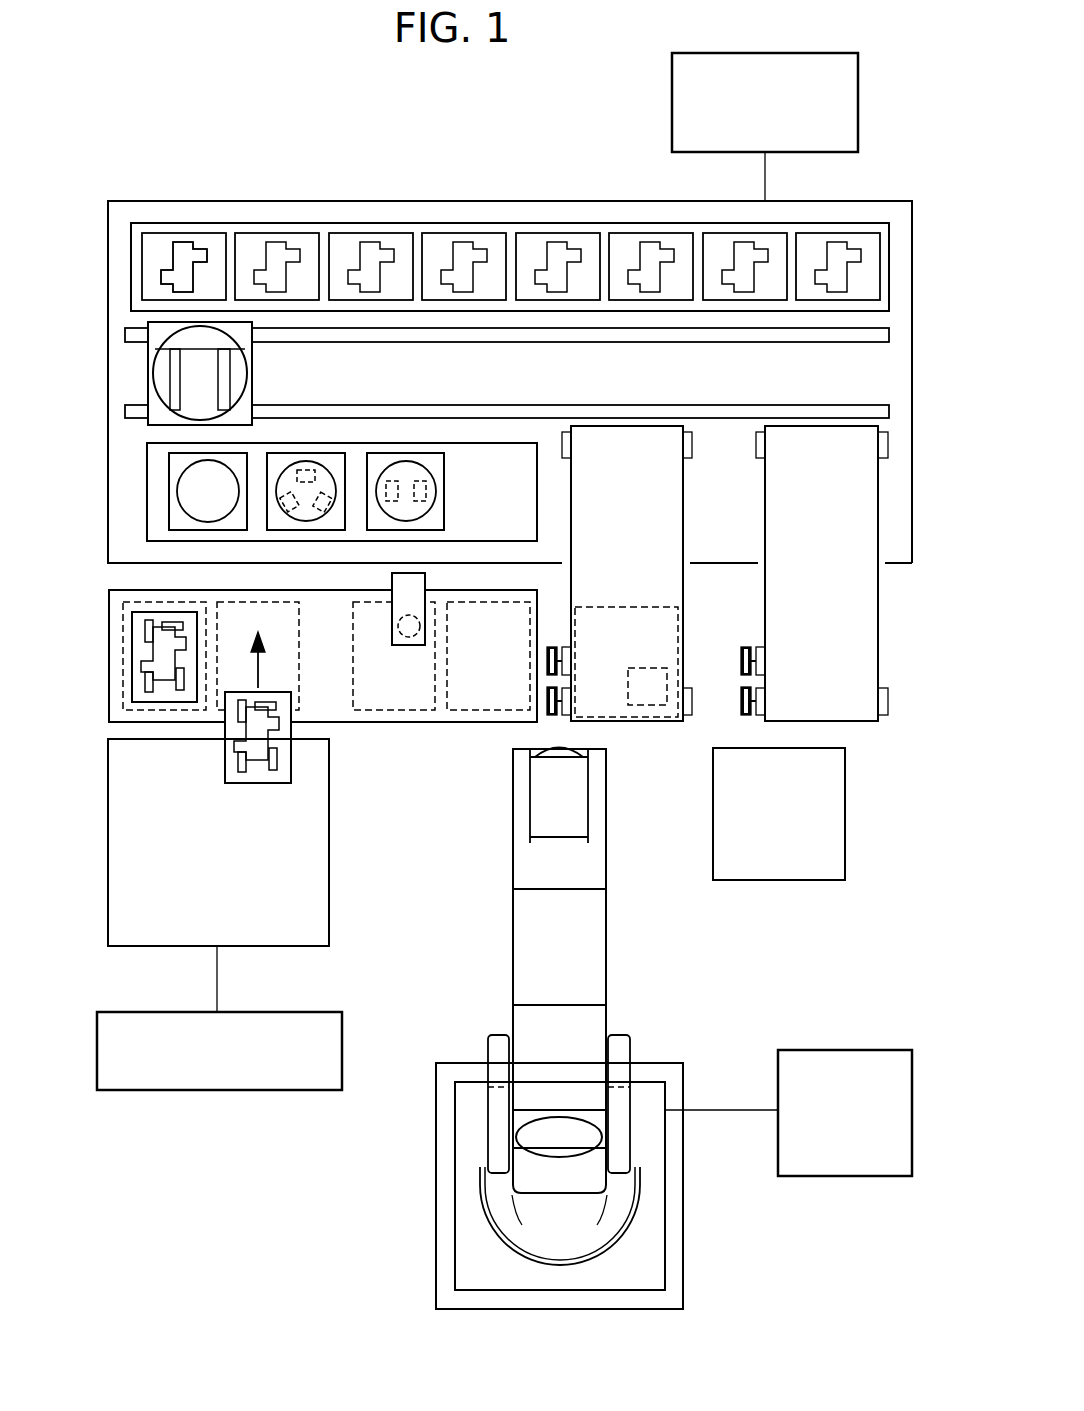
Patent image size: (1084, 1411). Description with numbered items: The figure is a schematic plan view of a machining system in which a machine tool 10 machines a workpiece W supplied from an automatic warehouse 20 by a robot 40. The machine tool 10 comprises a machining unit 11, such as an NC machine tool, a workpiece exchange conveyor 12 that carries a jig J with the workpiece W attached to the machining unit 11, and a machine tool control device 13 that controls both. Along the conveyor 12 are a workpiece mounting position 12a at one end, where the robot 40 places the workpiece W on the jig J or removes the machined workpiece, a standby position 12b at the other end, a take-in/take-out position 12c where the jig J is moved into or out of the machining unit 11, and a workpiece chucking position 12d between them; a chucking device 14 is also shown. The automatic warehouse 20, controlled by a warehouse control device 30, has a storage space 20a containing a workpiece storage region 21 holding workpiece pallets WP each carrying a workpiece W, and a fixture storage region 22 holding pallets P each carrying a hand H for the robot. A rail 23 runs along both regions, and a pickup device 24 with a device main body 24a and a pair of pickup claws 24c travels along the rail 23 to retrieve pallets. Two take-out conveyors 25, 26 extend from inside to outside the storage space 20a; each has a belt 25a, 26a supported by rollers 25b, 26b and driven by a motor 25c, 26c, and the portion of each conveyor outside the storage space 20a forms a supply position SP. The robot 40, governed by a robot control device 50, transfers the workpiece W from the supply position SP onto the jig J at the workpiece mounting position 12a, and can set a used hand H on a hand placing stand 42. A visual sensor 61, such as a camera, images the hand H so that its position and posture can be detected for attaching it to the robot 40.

The machine tool 10 is at (95, 748).
The machining unit 11 is at (329, 876).
The workpiece exchange conveyor 12 is at (109, 705).
The workpiece mounting position 12a is at (480, 712).
The standby position 12b is at (123, 660).
The take-in/take-out position 12c is at (299, 670).
The workpiece chucking position 12d is at (396, 712).
The machine tool control device 13 is at (217, 1090).
The chucking device 14 is at (422, 626).
The automatic warehouse 20 is at (884, 182).
The storage space 20a is at (912, 563).
The workpiece storage region 21 is at (372, 223).
The fixture storage region 22 is at (147, 527).
The rail 23 is at (889, 335).
The pickup device 24 is at (140, 390).
The device main body 24a is at (148, 355).
The pickup claws 24c is at (170, 378).
The take-out conveyor 25 is at (668, 721).
The belt 25a is at (683, 540).
The rollers 25b is at (692, 445).
The motor 25c is at (560, 655).
The take-out conveyor 26 is at (860, 721).
The belt 26a is at (878, 640).
The rollers 26b is at (888, 445).
The motor 26c is at (754, 655).
The warehouse control device 30 is at (671, 96).
The robot 40 is at (495, 978).
The hand placing stand 42 is at (787, 880).
The robot control device 50 is at (838, 1176).
The visual sensor 61 is at (638, 706).
The workpiece W is at (176, 242).
The workpiece pallet WP is at (207, 233).
The hand H is at (178, 470).
The pallet P is at (165, 495).
The jig J is at (186, 703).
The supply position SP is at (648, 607).